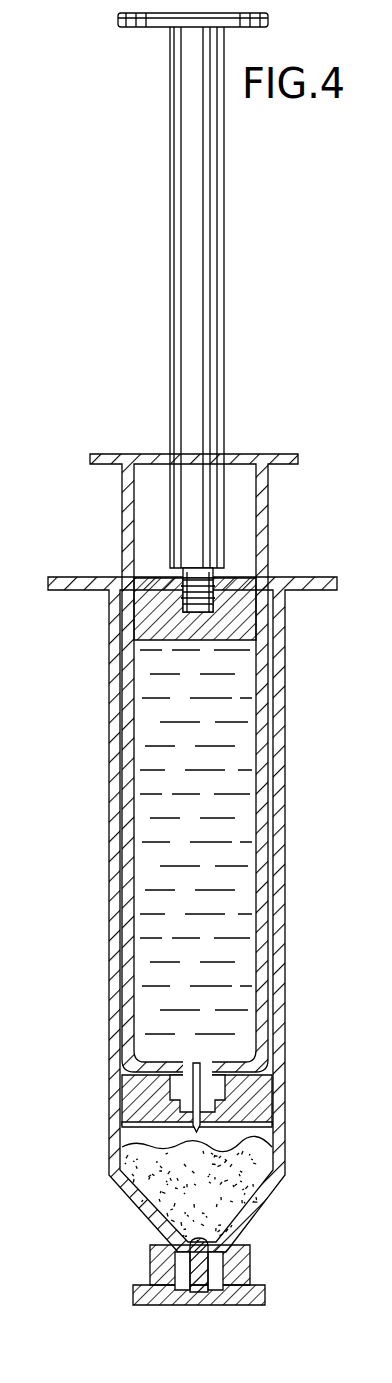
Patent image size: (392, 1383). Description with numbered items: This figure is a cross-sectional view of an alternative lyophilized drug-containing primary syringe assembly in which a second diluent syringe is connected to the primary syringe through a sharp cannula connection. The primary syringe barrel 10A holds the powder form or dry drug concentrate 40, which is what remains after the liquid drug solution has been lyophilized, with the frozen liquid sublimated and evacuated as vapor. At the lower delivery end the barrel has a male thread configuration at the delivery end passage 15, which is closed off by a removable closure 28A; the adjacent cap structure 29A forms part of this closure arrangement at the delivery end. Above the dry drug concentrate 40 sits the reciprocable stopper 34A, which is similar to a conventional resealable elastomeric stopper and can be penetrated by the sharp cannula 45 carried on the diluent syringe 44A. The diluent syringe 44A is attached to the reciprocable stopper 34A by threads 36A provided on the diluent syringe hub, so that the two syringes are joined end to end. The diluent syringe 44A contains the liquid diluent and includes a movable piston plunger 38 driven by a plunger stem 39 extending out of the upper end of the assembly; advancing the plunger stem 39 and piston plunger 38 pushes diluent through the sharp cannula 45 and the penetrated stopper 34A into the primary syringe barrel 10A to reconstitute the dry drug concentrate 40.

The primary syringe barrel 10A is at (285, 850).
The plunger stem 39 is at (186, 352).
The movable piston plunger 38 is at (155, 617).
The diluent syringe 44A is at (166, 738).
The threads 36A is at (118, 1092).
The reciprocable stopper 34A is at (148, 1128).
The sharp cannula 45 is at (197, 1072).
The dry drug concentrate 40 is at (253, 1182).
The removable closure 28A is at (160, 1303).
The cap body 29A is at (152, 1276).
The delivery end passage 15 is at (232, 1271).